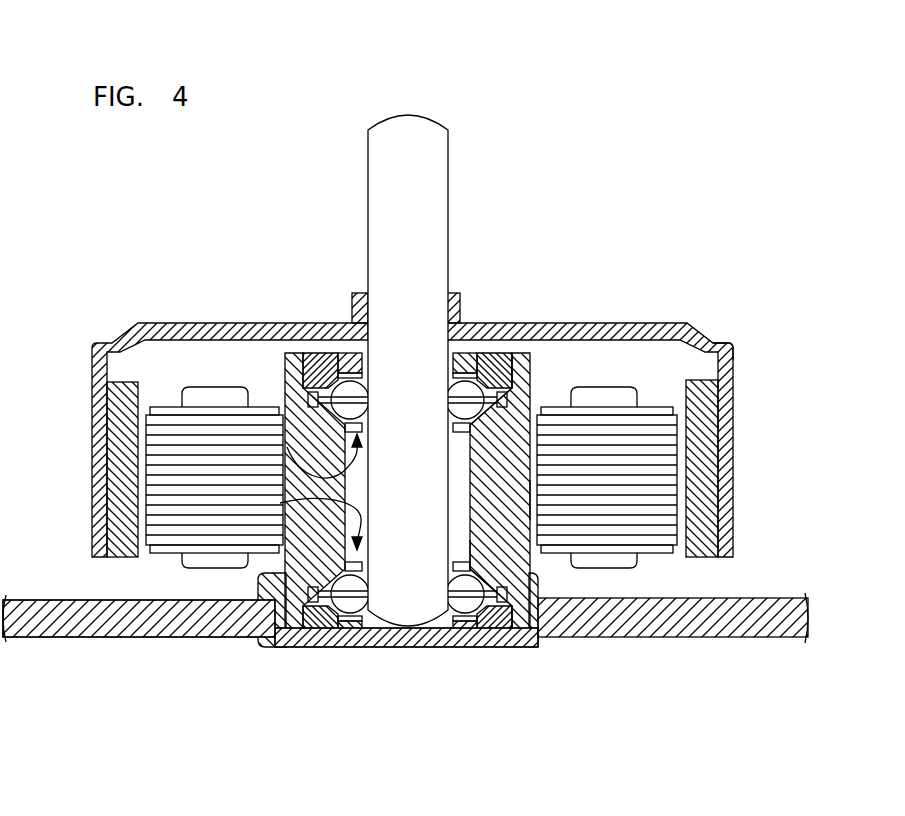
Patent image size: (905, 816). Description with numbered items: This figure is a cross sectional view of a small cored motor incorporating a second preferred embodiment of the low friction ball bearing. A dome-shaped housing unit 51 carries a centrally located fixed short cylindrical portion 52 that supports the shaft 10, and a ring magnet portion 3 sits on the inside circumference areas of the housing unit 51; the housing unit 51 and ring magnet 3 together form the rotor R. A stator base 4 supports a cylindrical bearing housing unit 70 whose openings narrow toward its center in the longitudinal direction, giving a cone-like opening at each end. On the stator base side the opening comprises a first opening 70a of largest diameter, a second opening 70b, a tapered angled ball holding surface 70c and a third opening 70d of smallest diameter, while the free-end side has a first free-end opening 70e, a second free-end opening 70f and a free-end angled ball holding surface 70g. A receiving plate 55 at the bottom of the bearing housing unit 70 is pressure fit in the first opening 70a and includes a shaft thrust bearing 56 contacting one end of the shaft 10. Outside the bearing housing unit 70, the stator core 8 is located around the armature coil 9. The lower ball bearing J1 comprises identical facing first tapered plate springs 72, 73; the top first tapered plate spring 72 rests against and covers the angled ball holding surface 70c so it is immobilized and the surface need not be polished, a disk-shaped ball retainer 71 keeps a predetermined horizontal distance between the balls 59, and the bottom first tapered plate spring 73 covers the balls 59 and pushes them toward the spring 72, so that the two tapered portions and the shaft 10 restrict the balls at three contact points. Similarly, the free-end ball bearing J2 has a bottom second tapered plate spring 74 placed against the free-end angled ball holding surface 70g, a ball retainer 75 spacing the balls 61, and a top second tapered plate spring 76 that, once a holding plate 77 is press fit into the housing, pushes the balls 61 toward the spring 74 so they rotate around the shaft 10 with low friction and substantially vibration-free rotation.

The ring magnet portion 3 is at (118, 400).
The stator base 4 is at (757, 620).
The stator core 8 is at (205, 447).
The armature coil 9 is at (212, 397).
The shaft 10 is at (414, 140).
The housing unit 51 is at (660, 322).
The fixed short cylindrical portion 52 is at (456, 305).
The receiving plate 55 is at (413, 625).
The shaft thrust bearing 56 is at (375, 630).
The balls 59 is at (335, 610).
The balls 61 is at (465, 388).
The cylindrical bearing housing unit 70 is at (537, 598).
The first opening 70a is at (522, 590).
The second opening 70b is at (510, 612).
The angled ball holding surface 70c is at (483, 572).
The third opening 70d is at (462, 488).
The first free-end opening 70e is at (490, 360).
The second free-end opening 70f is at (502, 378).
The free-end angled ball holding surface 70g is at (490, 413).
The ball retainer 71 is at (450, 605).
The top first tapered plate spring 72 is at (343, 607).
The bottom first tapered plate spring 73 is at (484, 610).
The bottom second tapered plate spring 74 is at (330, 385).
The ball retainer 75 is at (480, 398).
The top second tapered plate spring 76 is at (342, 417).
The holding plate 77 is at (347, 367).
The rotor R is at (735, 350).
The ball bearing J1 is at (280, 503).
The ball bearing J2 is at (287, 447).